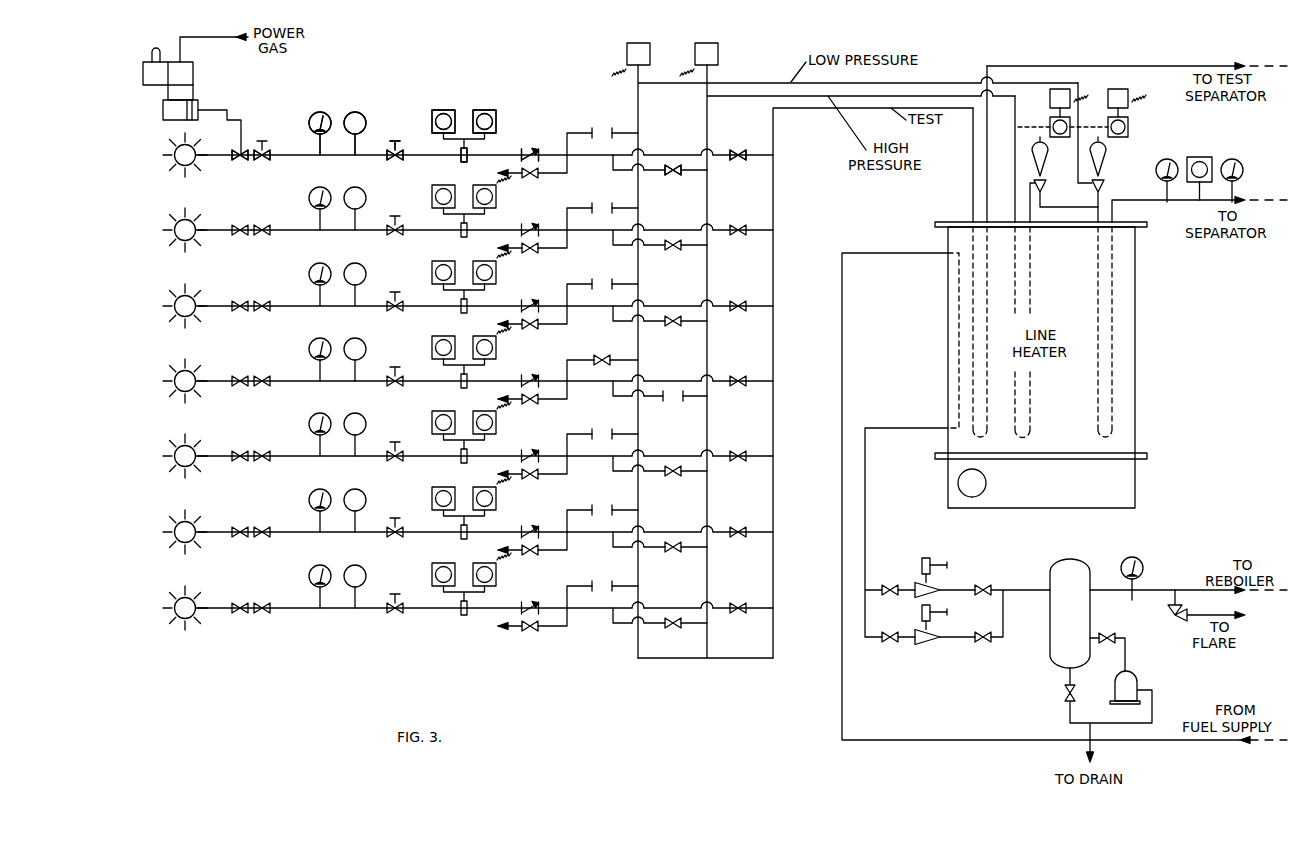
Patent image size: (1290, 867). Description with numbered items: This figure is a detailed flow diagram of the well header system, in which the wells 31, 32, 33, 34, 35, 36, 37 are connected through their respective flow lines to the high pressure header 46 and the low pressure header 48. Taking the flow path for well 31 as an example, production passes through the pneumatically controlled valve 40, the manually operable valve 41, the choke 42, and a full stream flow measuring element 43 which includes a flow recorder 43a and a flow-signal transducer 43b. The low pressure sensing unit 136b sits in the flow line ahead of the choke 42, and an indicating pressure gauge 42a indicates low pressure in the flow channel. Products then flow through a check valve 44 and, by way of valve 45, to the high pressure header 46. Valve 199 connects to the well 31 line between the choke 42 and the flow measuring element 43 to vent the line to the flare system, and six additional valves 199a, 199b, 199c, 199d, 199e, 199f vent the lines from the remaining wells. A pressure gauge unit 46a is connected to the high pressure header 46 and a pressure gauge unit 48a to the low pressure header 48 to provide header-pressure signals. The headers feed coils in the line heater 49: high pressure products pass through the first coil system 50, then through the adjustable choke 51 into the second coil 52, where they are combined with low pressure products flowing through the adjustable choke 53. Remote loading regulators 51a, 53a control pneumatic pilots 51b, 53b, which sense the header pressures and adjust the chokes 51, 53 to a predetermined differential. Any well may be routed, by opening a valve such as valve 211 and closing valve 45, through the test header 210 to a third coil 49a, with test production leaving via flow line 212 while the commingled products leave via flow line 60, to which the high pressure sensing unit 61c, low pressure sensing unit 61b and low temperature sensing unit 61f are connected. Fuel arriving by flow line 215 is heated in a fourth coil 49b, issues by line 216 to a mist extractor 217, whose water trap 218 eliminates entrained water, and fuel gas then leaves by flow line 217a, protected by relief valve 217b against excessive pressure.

The well 31 is at (174, 155).
The well 32 is at (174, 230).
The well 33 is at (174, 306).
The well 34 is at (174, 381).
The well 35 is at (174, 456).
The well 36 is at (174, 532).
The well 37 is at (174, 608).
The pneumatically controlled valve 40 is at (242, 160).
The manually operable valve 41 is at (264, 160).
The choke 42 is at (397, 160).
The indicating pressure gauge 42a is at (311, 117).
The low pressure sensing unit 136b is at (363, 117).
The full stream flow measuring element 43 is at (467, 158).
The flow recorder 43a is at (444, 109).
The flow-signal transducer 43b is at (486, 109).
The check valve 44 is at (532, 150).
The valve 45 is at (676, 175).
The high pressure header 46 is at (708, 354).
The pressure gauge unit 46a is at (704, 43).
The low pressure header 48 is at (639, 354).
The pressure gauge unit 48a is at (637, 43).
The line heater 49 is at (948, 235).
The third coil 49a is at (973, 296).
The fourth coil 49b is at (948, 335).
The first coil system 50 is at (1015, 307).
The adjustable choke 51 is at (1043, 189).
The remote loading regulator 51a is at (1072, 93).
The pneumatic pilot 51b is at (1049, 126).
The second coil 52 is at (1097, 307).
The adjustable choke 53 is at (1102, 189).
The remote loading regulator 53a is at (1130, 96).
The pneumatic pilot 53b is at (1130, 128).
The flow line 60 is at (1145, 200).
The low pressure sensing unit 61b is at (1241, 162).
The high pressure sensing unit 61c is at (1163, 161).
The low temperature sensing unit 61f is at (1199, 168).
The valve 199 is at (536, 179).
The valve 199a is at (536, 254).
The valve 199b is at (536, 330).
The valve 199c is at (536, 405).
The valve 199d is at (536, 480).
The valve 199e is at (536, 556).
The valve 199f is at (536, 632).
The test header 210 is at (773, 354).
The valve 211 is at (738, 149).
The flow line 212 is at (1034, 66).
The flow line 215 is at (842, 432).
The line 216 is at (865, 502).
The mist extractor 217 is at (1068, 559).
The flow line 217a is at (1155, 587).
The relief valve 217b is at (1172, 618).
The water trap 218 is at (1137, 677).